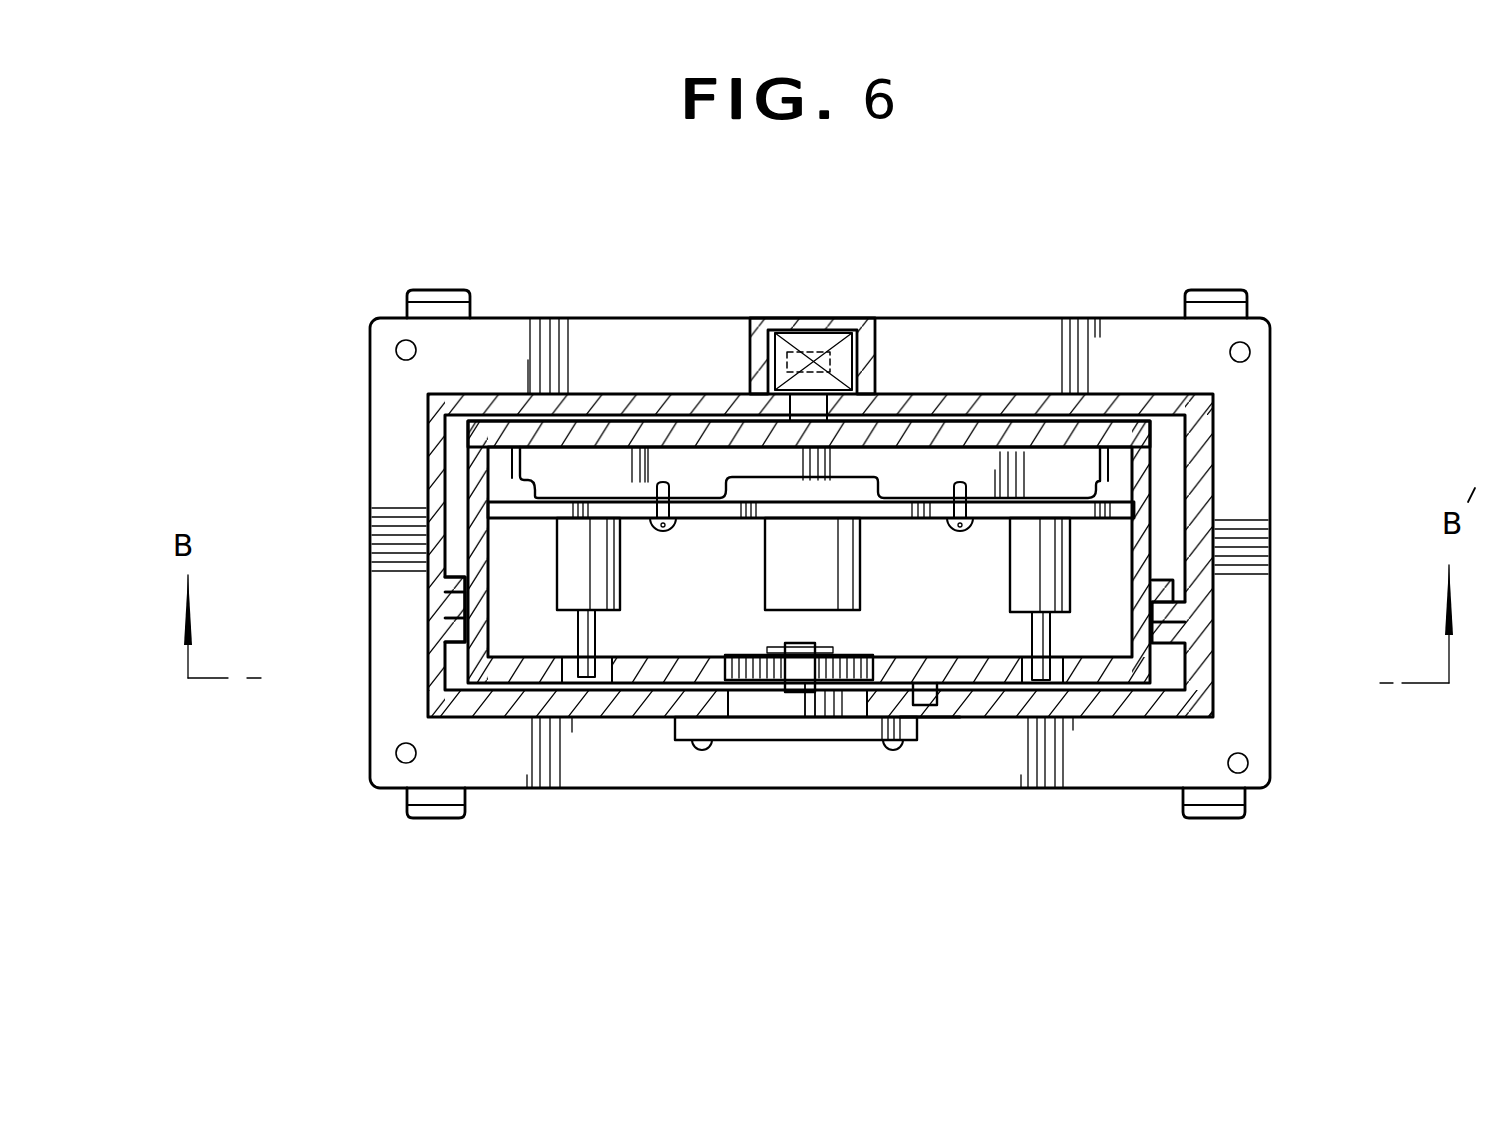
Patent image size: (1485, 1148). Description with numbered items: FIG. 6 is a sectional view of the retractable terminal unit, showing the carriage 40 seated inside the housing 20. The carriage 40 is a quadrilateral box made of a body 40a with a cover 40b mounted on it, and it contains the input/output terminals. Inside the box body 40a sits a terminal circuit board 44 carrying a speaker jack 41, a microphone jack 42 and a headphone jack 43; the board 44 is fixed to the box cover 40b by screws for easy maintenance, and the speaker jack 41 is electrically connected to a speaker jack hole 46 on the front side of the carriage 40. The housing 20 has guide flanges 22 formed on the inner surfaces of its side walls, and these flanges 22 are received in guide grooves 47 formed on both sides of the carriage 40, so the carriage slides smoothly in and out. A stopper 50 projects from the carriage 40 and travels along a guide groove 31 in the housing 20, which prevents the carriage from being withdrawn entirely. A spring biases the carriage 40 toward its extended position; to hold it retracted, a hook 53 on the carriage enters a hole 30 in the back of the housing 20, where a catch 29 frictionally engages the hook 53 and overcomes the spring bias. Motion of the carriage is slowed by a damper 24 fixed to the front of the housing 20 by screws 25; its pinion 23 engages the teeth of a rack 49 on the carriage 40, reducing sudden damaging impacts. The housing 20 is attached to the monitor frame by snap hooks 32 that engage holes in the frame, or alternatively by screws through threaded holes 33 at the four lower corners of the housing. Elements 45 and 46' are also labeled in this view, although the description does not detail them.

The housing 20 is at (638, 728).
The guide flanges 22 is at (448, 596).
The pinion 23 is at (752, 685).
The damper 24 is at (792, 732).
The screws 25 is at (703, 746).
The catch 29 is at (790, 320).
The hole 30 is at (853, 321).
The guide groove 31 is at (925, 716).
The snap hooks 32 is at (412, 297).
The threaded holes 33 is at (396, 352).
The carriage 40 is at (1225, 601).
The body 40a is at (477, 553).
The cover 40b is at (612, 432).
The speaker jack 41 is at (573, 562).
The microphone jack 42 is at (833, 597).
The headphone jack 43 is at (1165, 585).
The terminal circuit board 44 is at (1025, 515).
The pin 45 is at (662, 482).
The speaker jack hole 46 is at (549, 757).
The shaft 46' is at (1077, 763).
The guide grooves 47 is at (1053, 577).
The rack 49 is at (862, 716).
The stopper 50 is at (945, 712).
The hook 53 is at (813, 350).